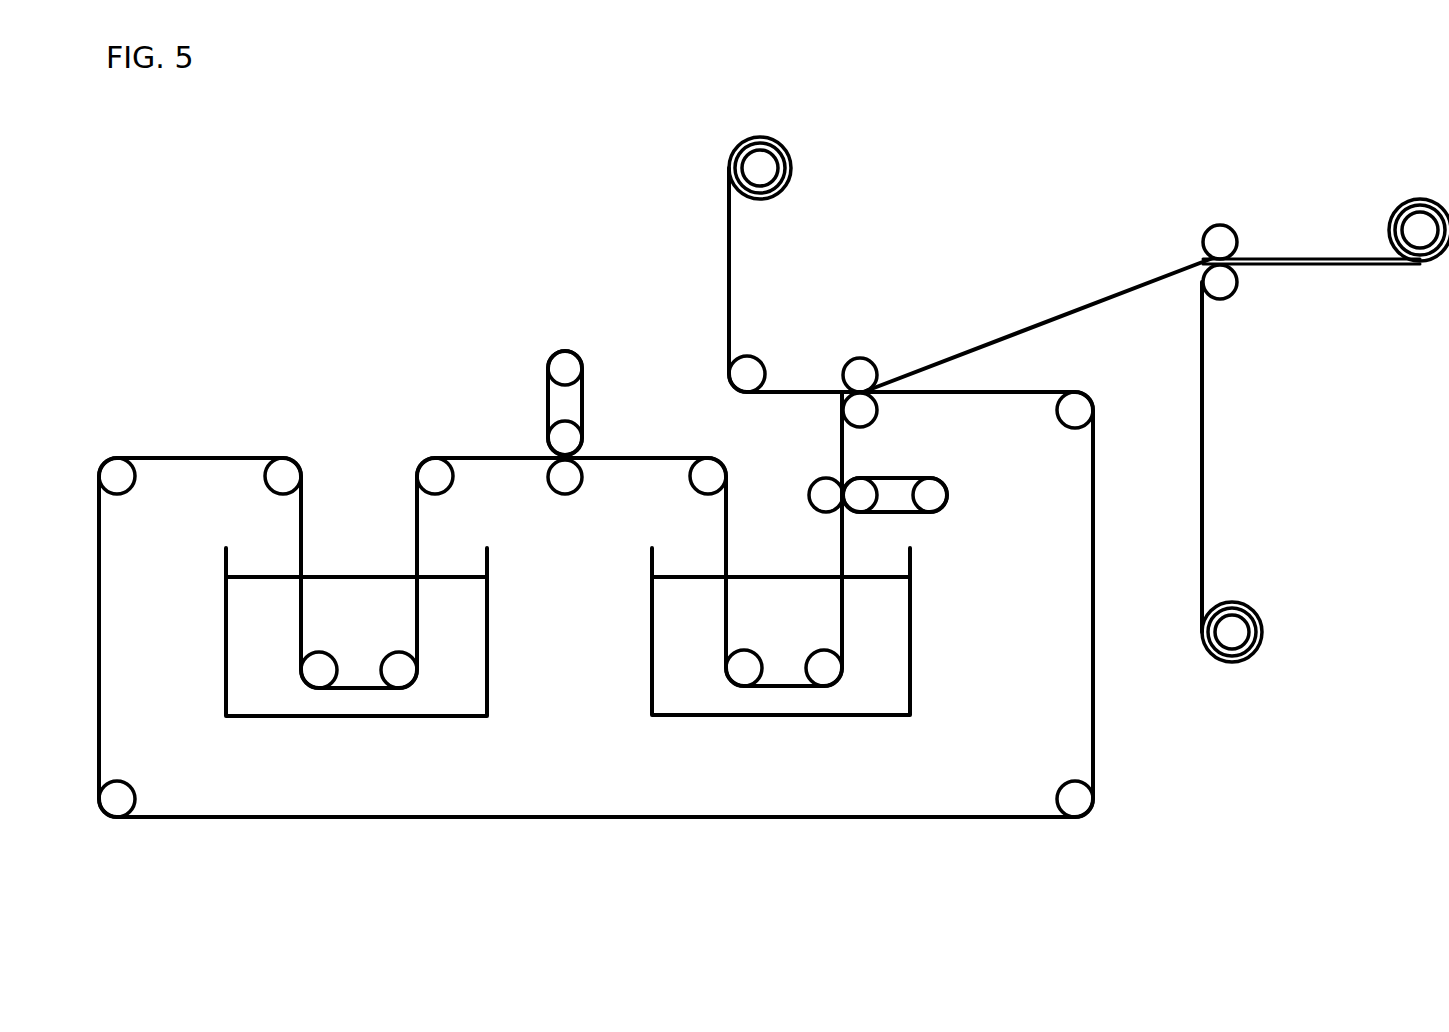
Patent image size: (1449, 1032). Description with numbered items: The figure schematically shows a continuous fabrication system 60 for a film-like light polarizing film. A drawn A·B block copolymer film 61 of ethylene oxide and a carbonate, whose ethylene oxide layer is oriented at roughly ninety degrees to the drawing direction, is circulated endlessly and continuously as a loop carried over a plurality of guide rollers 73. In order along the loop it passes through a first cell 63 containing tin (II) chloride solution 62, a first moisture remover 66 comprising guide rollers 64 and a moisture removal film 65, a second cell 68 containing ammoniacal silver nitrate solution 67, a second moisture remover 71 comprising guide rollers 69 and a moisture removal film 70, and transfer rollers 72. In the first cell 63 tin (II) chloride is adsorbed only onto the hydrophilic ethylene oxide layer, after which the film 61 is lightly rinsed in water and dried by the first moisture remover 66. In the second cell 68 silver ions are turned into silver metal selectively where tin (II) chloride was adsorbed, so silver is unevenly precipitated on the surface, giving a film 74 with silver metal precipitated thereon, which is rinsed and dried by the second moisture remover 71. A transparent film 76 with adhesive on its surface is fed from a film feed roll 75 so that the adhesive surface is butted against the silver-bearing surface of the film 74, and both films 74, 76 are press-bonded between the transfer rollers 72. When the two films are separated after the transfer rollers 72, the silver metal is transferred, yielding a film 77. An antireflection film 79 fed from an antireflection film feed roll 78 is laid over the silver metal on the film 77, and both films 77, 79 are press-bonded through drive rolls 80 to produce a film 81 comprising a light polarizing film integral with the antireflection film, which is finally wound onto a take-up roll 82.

The continuous fabrication system 60 is at (285, 212).
The film 61 is at (190, 458).
The tin (II) chloride solution 62 is at (267, 698).
The first cell 63 is at (417, 718).
The guide rollers 64 is at (565, 360).
The moisture removal film 65 is at (585, 402).
The first moisture remover 66 is at (538, 425).
The ammoniacal silver nitrate solution 67 is at (708, 703).
The second cell 68 is at (867, 717).
The guide rollers 69 is at (818, 497).
The moisture removal film 70 is at (957, 467).
The second moisture remover 71 is at (887, 461).
The transfer rollers 72 is at (862, 375).
The guide rollers 73 is at (117, 475).
The film with silver metal precipitated thereon 74 is at (837, 545).
The film feed roll 75 is at (785, 172).
The transparent film 76 is at (725, 265).
The film 77 is at (1057, 313).
The antireflection film feed roll 78 is at (1240, 635).
The antireflection film 79 is at (1205, 460).
The drive rolls 80 is at (1220, 240).
The film 81 is at (1322, 268).
The take-up roll 82 is at (1423, 222).